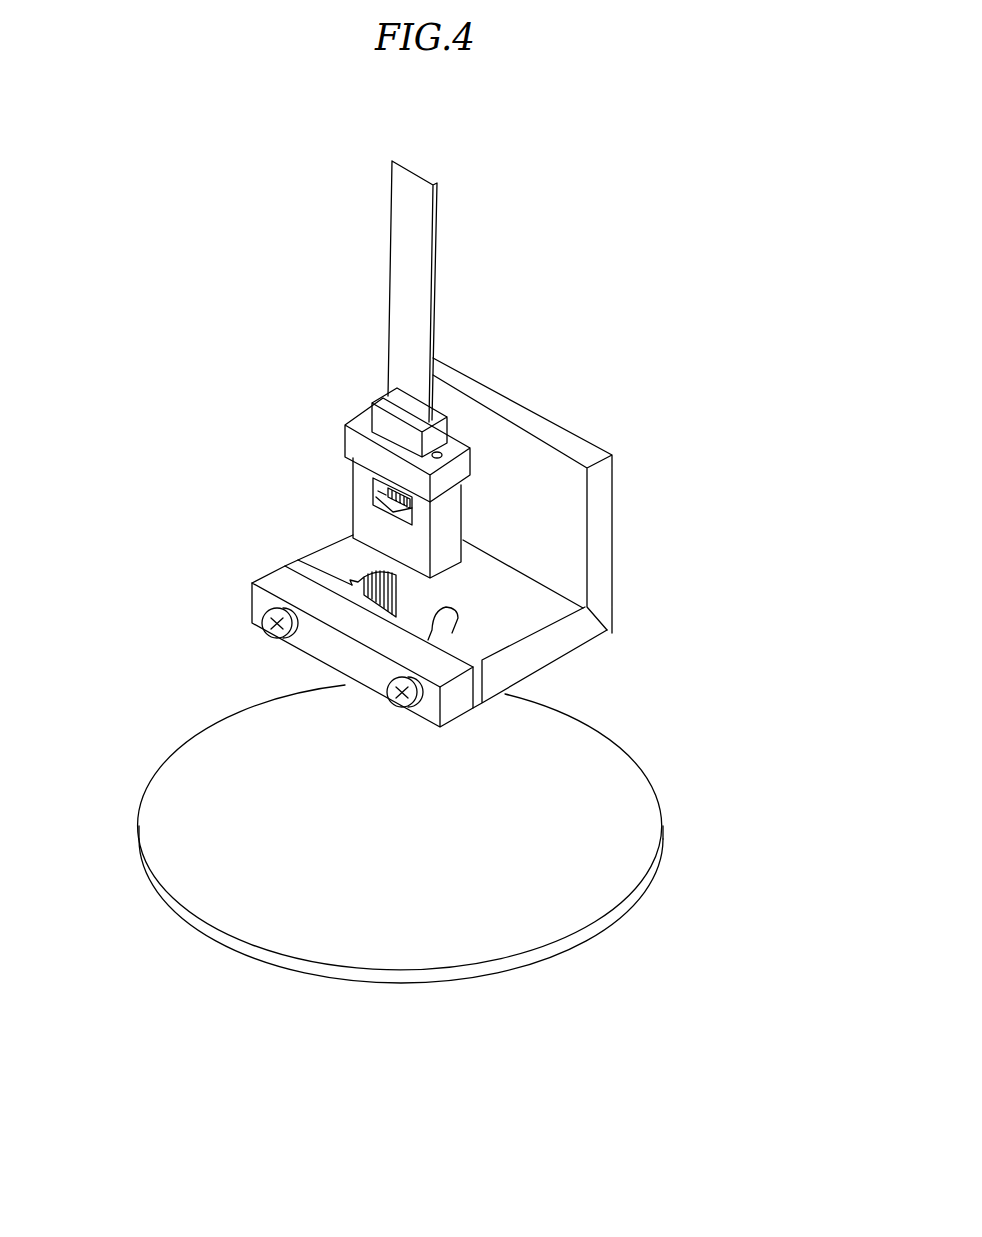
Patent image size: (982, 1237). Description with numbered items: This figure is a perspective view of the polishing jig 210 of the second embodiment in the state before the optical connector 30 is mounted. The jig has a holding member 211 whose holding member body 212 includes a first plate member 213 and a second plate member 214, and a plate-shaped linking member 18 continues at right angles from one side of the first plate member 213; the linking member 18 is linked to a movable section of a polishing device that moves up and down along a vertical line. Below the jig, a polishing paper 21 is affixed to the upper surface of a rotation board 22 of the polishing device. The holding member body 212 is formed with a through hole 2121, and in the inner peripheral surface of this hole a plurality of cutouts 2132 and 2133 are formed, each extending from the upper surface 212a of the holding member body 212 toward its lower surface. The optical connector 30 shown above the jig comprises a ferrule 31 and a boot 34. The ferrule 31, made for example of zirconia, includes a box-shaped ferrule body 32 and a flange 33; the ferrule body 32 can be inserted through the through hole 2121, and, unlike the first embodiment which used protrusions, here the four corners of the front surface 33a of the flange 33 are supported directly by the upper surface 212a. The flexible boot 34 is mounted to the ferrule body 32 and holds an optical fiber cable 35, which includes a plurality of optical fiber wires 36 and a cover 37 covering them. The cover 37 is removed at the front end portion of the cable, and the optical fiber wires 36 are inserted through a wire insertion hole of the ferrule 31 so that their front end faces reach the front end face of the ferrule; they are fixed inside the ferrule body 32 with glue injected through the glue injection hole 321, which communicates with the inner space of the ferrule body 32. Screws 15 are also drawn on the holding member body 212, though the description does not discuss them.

The screw 15 is at (262, 607).
The linking member 18 is at (628, 534).
The polishing paper 21 is at (170, 800).
The rotation board 22 is at (463, 972).
The optical connector 30 is at (327, 369).
The ferrule 31 is at (337, 467).
The ferrule body 32 is at (357, 492).
The flange 33 is at (352, 440).
The front surface of the flange 33a is at (360, 478).
The boot 34 is at (368, 412).
The optical fiber cable 35 is at (363, 291).
The optical fiber wires 36 is at (390, 492).
The cover 37 is at (400, 293).
The polishing jig 210 is at (589, 437).
The holding member 211 is at (612, 654).
The holding member body 212 is at (501, 570).
The upper surface of the holding member body 212a is at (530, 606).
The first plate member 213 is at (527, 660).
The second plate member 214 is at (453, 712).
The glue injection hole 321 is at (380, 500).
The through hole 2121 is at (413, 596).
The cutout 2132 is at (465, 542).
The cutout 2133 is at (366, 570).